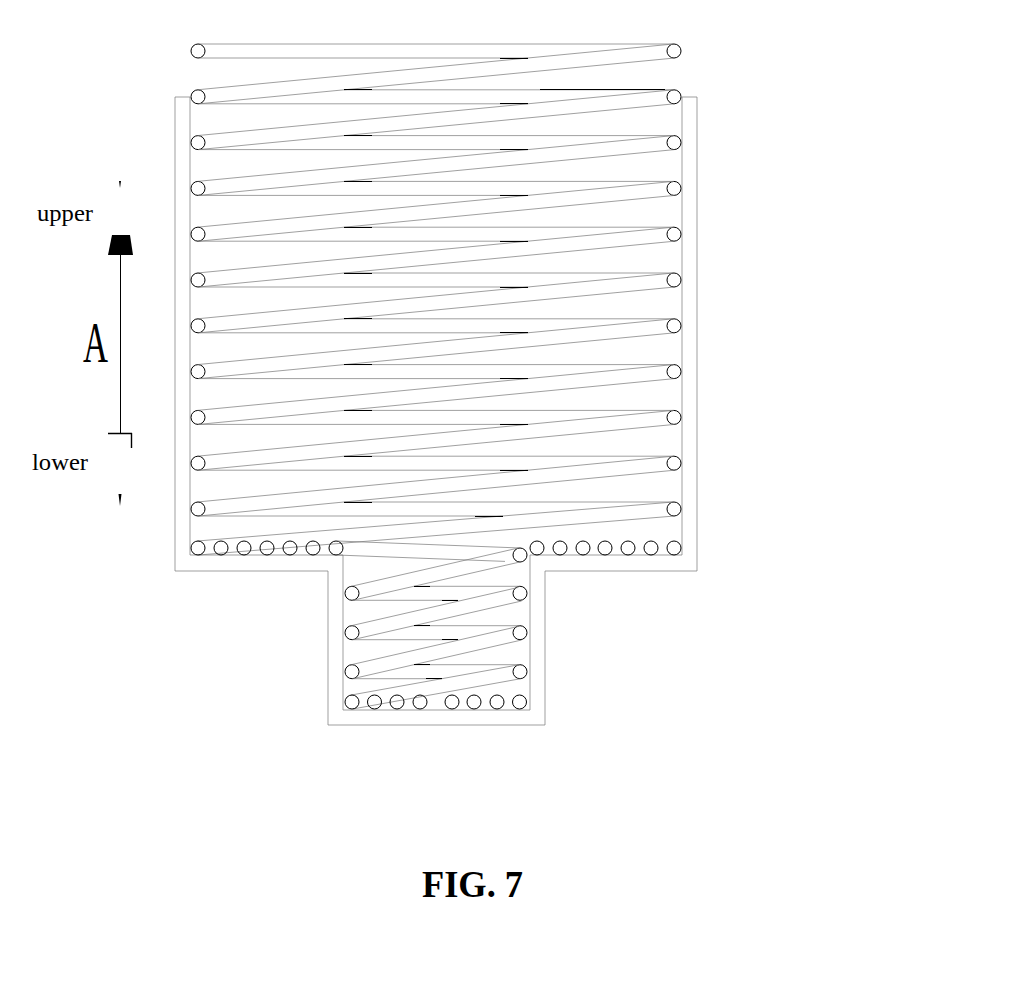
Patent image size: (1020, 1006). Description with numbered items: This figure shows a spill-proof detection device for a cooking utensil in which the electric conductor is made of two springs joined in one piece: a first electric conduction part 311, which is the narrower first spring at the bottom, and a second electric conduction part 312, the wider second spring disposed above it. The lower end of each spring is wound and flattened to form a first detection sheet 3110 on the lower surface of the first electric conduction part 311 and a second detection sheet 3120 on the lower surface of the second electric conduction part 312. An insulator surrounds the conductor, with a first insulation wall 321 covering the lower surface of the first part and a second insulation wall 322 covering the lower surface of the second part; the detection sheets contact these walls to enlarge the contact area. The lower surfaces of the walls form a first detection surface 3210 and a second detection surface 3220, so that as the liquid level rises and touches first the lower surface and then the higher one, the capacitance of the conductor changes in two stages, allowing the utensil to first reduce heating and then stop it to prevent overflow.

The first electric conduction part 311 is at (453, 605).
The second electric conduction part 312 is at (600, 308).
The first detection sheet 3110 is at (392, 705).
The second detection sheet 3120 is at (287, 552).
The first insulation wall 321 is at (428, 720).
The second insulation wall 322 is at (605, 565).
The first detection surface 3210 is at (502, 725).
The second detection surface 3220 is at (297, 571).